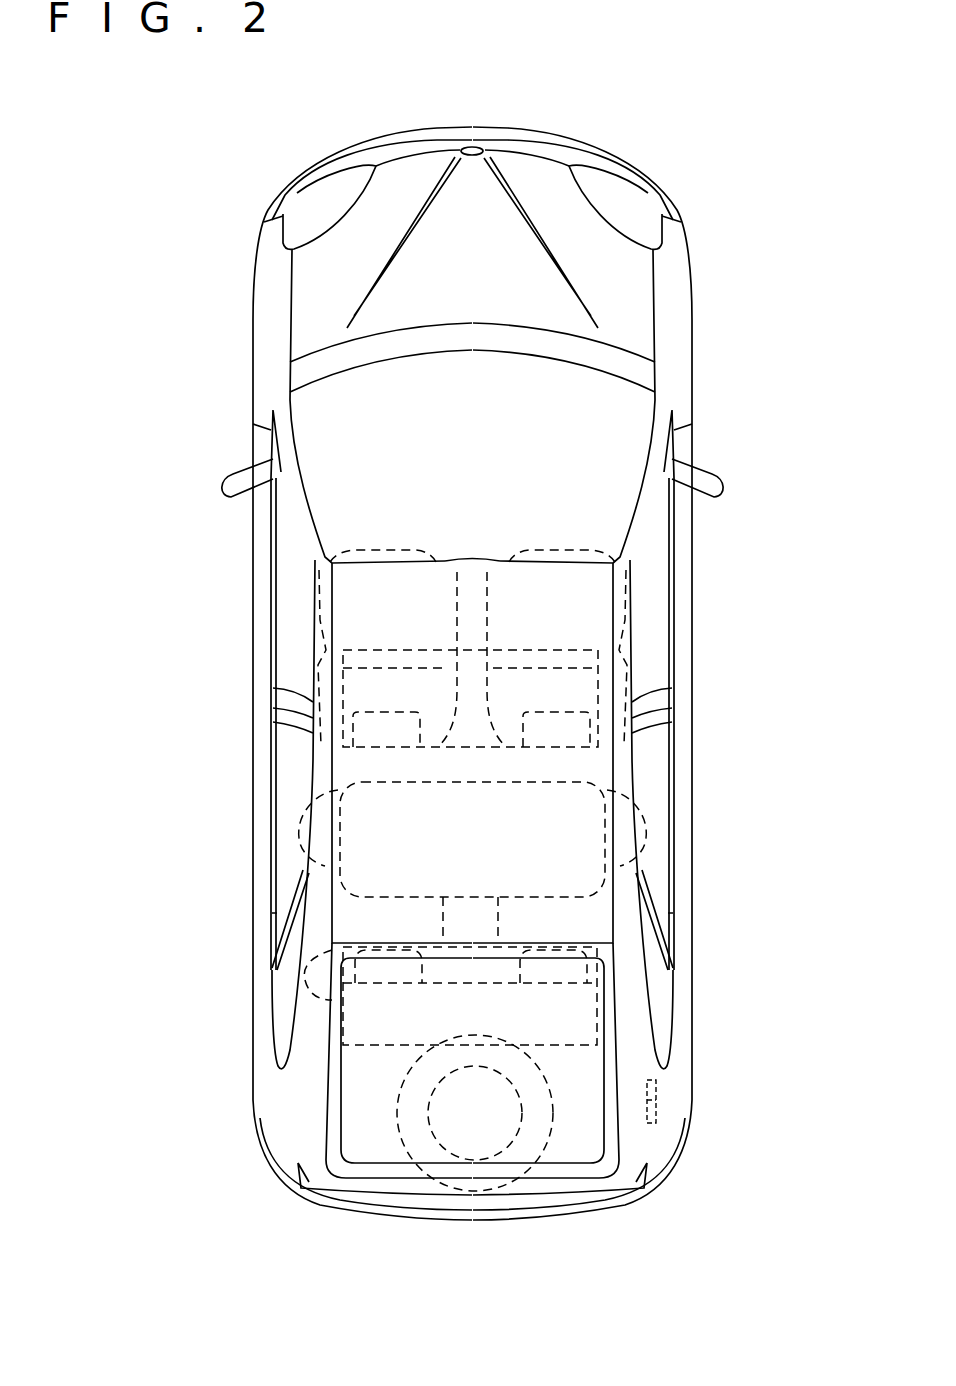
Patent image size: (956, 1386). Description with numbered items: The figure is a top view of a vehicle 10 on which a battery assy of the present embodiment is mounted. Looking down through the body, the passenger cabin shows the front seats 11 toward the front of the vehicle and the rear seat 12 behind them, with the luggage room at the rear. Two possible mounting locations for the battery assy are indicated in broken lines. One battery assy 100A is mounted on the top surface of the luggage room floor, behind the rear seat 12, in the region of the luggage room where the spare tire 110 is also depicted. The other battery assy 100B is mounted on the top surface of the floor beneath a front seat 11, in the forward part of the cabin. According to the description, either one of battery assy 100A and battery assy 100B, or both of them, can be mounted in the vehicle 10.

The vehicle 10 is at (233, 656).
The front seats 11 is at (313, 607).
The rear seat 12 is at (375, 832).
The battery assy 100A is at (375, 1008).
The battery assy 100B is at (567, 693).
The spare tire 110 is at (455, 1182).